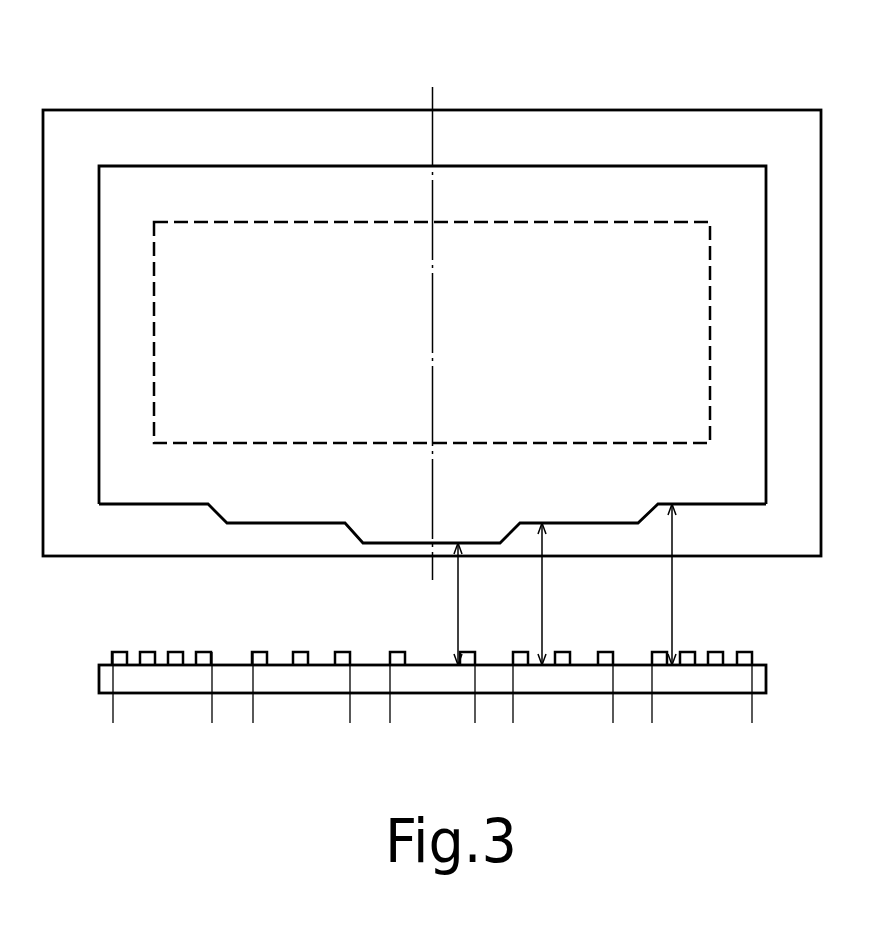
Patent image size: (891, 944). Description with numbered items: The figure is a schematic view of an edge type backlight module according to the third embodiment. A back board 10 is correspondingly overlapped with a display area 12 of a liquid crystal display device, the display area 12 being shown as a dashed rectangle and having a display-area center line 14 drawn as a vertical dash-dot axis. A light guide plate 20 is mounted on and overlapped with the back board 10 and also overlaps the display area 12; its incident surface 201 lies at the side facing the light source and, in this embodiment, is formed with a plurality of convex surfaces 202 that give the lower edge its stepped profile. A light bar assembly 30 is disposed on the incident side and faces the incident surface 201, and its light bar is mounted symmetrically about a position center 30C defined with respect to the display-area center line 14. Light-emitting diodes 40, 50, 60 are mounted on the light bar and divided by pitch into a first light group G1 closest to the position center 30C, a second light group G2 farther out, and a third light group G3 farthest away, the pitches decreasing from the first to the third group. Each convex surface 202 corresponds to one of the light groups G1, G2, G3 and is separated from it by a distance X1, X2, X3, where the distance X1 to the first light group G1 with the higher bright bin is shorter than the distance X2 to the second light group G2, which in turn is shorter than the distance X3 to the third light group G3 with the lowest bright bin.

The back board 10 is at (655, 110).
The display area 12 is at (494, 222).
The display-area center line 14 is at (433, 107).
The light guide plate 20 is at (577, 166).
The incident surface 201 is at (748, 518).
The convex surfaces 202 is at (155, 504).
The light bar assembly 30 is at (768, 687).
The position center 30C is at (430, 664).
The light-emitting diodes 40 is at (400, 652).
The light-emitting diodes 50 is at (303, 652).
The light-emitting diodes 60 is at (204, 652).
The distance X1 is at (478, 604).
The distance X2 is at (562, 594).
The distance X3 is at (692, 584).
The first light group G1 is at (428, 718).
The second light group G2 is at (432, 718).
The third light group G3 is at (432, 718).